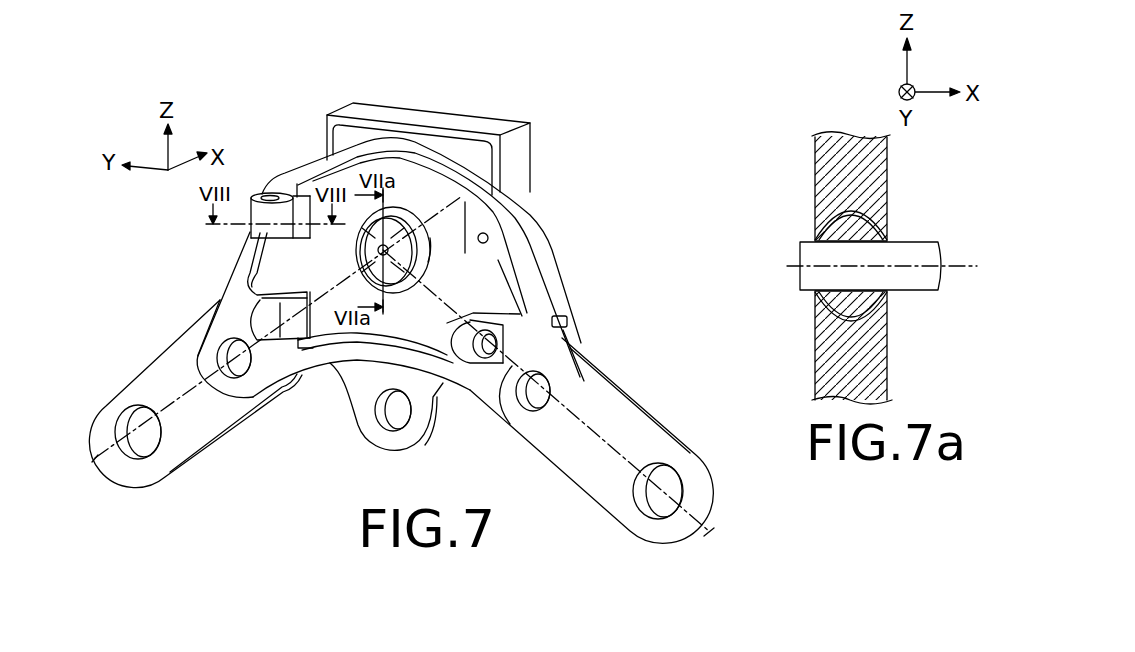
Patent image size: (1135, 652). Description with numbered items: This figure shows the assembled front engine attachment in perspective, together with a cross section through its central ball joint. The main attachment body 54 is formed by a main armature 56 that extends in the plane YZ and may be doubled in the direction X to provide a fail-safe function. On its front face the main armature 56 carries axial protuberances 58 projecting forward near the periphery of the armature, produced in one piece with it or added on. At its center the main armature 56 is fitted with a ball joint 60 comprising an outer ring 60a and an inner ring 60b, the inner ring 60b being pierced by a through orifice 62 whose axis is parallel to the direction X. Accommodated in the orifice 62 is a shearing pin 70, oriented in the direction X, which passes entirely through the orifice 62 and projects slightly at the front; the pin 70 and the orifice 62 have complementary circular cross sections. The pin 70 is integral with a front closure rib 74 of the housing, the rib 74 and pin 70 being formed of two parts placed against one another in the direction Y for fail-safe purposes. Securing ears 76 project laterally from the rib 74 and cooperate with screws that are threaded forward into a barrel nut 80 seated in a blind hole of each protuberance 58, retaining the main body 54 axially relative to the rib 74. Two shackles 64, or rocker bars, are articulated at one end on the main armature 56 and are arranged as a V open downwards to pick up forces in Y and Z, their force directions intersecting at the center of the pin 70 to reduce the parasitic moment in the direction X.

In FIG. 7, the main attachment body 54 is at (314, 437).
In FIG. 7, the main armature 56 is at (283, 265).
In FIG. 7, the axial protuberances 58 is at (258, 322).
In FIG. 7a, the ball joint 60 is at (797, 232).
In FIG. 7a, the outer ring 60a is at (815, 225).
In FIG. 7, the inner ring 60b is at (433, 248).
In FIG. 7a, the inner ring 60b is at (833, 246).
In FIG. 7a, the orifice 62 is at (860, 247).
In FIG. 7, the shackles 64 is at (138, 378).
In FIG. 7, the shearing pin 70 is at (424, 263).
In FIG. 7, the front closure rib 74 is at (498, 126).
In FIG. 7, the securing ears 76 is at (538, 192).
In FIG. 7, the barrel nut 80 is at (270, 192).